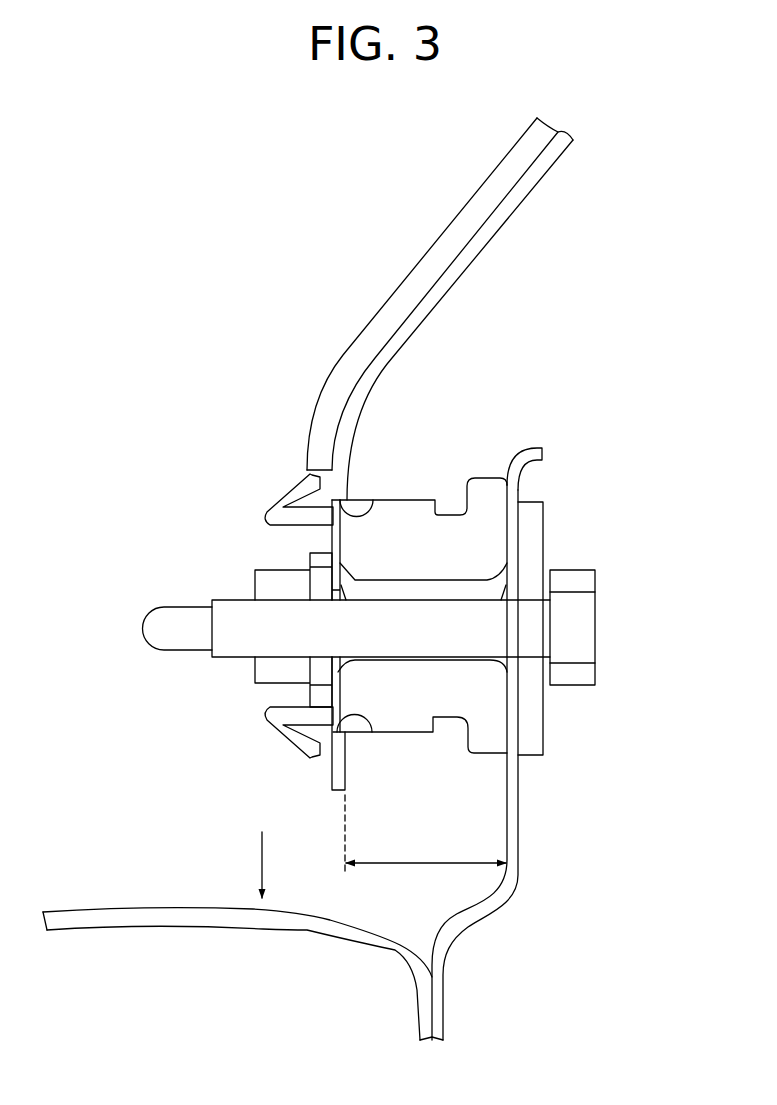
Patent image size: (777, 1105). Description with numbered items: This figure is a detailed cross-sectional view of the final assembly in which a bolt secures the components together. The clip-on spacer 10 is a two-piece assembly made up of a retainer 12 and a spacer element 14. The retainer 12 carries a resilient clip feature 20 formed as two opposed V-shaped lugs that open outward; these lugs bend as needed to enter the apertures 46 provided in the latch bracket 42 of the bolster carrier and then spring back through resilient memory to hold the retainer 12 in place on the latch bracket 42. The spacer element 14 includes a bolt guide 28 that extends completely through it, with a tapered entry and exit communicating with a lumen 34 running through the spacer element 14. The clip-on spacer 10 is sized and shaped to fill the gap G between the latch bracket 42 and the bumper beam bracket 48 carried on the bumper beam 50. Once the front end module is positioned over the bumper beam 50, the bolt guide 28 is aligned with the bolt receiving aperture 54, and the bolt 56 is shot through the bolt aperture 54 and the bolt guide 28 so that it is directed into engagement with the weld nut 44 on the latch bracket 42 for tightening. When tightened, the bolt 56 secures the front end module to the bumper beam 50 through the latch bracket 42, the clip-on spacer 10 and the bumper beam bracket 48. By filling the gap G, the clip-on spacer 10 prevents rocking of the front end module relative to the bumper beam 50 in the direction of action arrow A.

The clip-on spacer 10 is at (493, 455).
The retainer 12 is at (405, 733).
The spacer element 14 is at (490, 518).
The resilient clip feature 20 is at (265, 516).
The bolt guide 28 is at (368, 667).
The lumen 34 is at (412, 582).
The latch bracket 42 is at (403, 343).
The weld nut 44 is at (257, 672).
The apertures 46 is at (350, 513).
The bumper beam bracket 48 is at (518, 812).
The bumper beam 50 is at (397, 950).
The bolt receiving aperture 54 is at (532, 600).
The bolt 56 is at (582, 642).
The action arrow A is at (262, 864).
The gap G is at (413, 863).